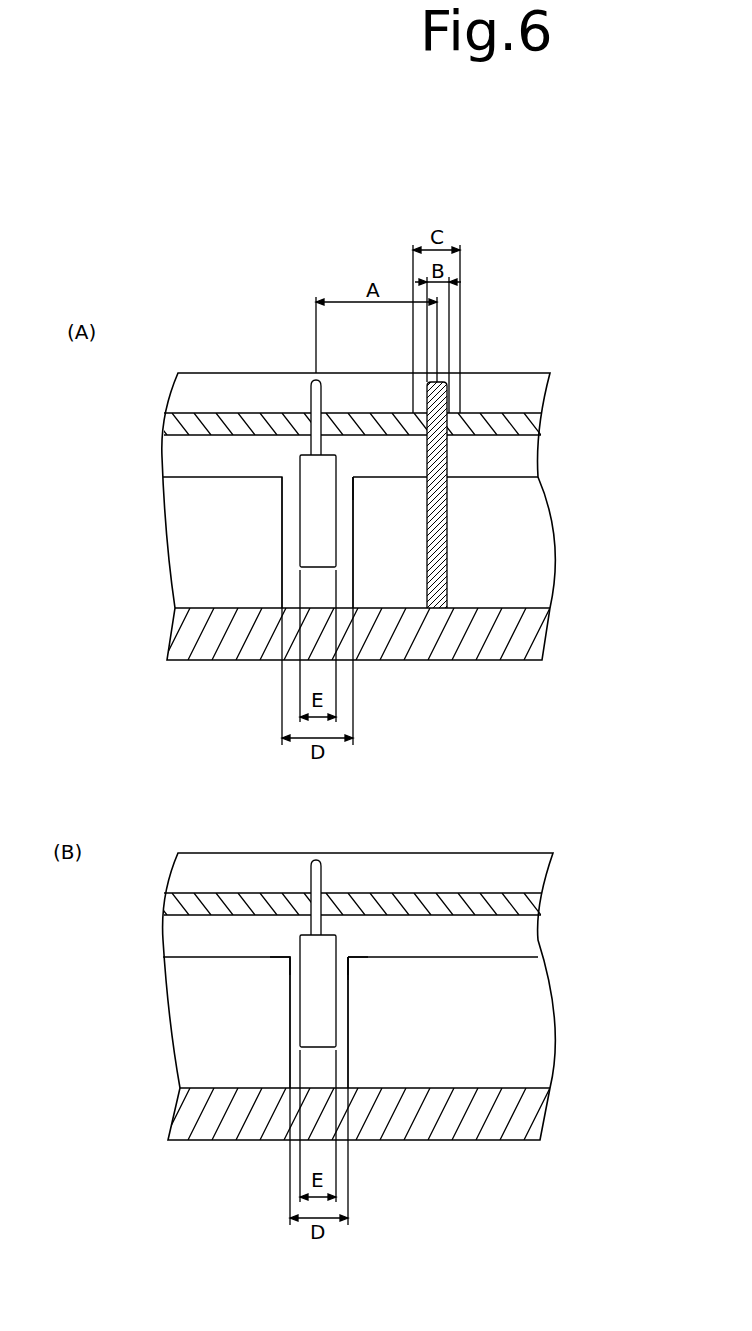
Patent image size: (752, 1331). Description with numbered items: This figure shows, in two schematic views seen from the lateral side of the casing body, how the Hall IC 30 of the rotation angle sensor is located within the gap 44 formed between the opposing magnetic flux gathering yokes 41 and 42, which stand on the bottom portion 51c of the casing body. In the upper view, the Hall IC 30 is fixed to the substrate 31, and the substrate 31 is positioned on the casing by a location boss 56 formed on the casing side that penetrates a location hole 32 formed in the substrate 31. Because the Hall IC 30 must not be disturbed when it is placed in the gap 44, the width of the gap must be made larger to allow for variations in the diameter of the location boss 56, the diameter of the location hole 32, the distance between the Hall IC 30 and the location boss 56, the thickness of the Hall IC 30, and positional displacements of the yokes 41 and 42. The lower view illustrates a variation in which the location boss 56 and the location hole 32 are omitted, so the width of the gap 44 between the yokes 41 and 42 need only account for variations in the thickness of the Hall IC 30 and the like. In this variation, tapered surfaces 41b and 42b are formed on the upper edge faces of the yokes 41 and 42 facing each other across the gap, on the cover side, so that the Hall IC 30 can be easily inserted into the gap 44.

The Hall IC 30 is at (308, 460).
The substrate 31 is at (513, 423).
The location hole 32 is at (453, 436).
The magnetic flux gathering yoke 41 is at (520, 525).
The magnetic flux gathering yoke 42 is at (197, 503).
The gap 44 is at (345, 478).
The location boss 56 is at (447, 387).
The bottom portion 51c is at (455, 638).
The tapered surface 41b is at (364, 966).
The tapered surface 42b is at (276, 966).